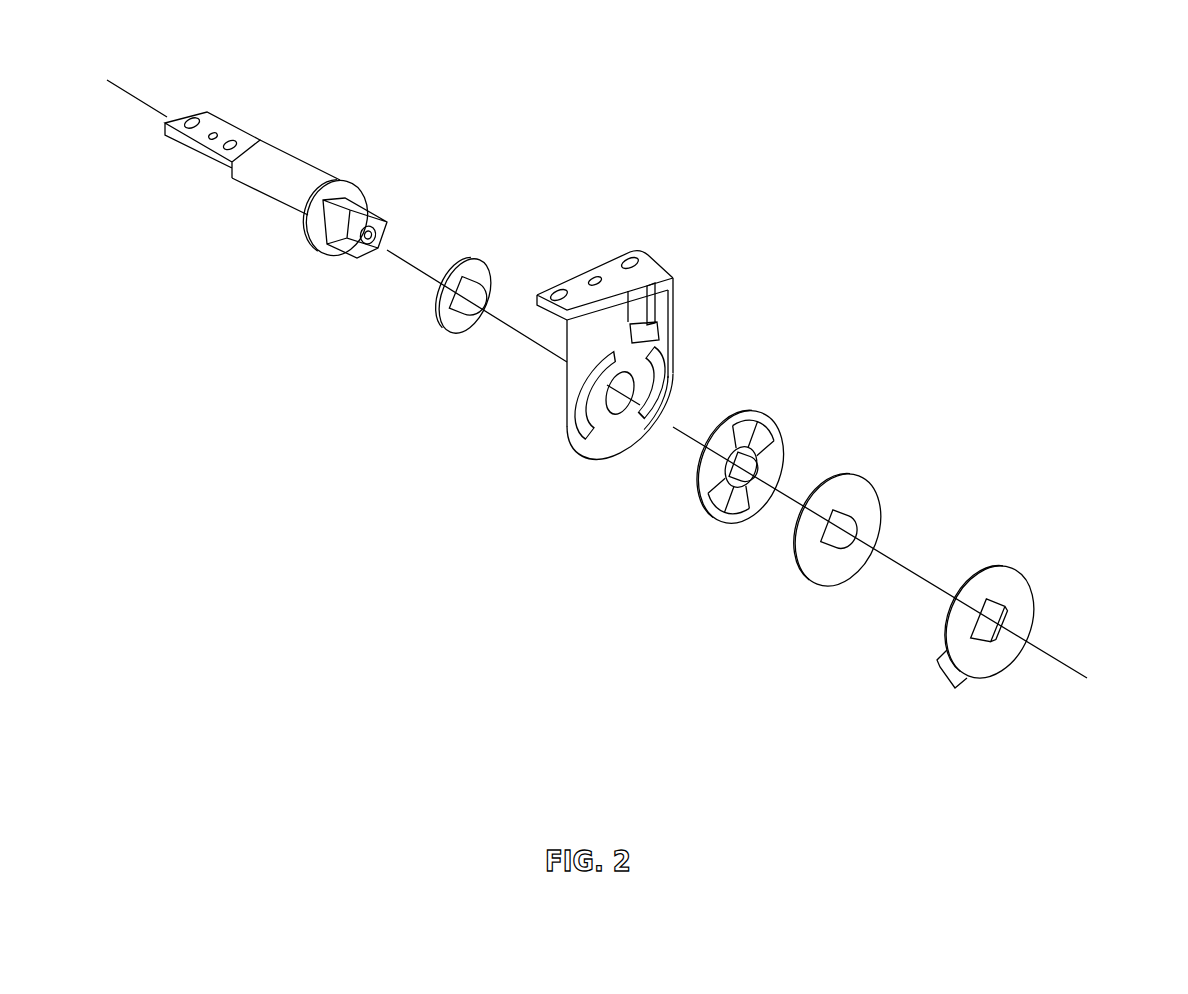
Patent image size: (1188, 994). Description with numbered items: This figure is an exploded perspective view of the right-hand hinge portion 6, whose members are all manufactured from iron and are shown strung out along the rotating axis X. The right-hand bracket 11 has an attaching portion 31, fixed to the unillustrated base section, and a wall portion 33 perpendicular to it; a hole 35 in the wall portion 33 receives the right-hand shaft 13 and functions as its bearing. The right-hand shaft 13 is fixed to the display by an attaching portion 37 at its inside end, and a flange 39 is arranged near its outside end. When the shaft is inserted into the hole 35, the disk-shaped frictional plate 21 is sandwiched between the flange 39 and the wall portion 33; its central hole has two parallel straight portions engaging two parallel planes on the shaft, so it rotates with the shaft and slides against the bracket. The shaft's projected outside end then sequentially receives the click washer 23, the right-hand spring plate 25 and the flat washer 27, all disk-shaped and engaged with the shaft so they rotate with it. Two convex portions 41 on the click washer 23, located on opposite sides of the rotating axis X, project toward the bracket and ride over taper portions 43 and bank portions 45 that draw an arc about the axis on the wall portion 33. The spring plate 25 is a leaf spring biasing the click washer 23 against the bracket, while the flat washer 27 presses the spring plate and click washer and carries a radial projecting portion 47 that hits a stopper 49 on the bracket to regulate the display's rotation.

The right-hand hinge portion 6 is at (745, 167).
The right-hand bracket 11 is at (594, 360).
The right-hand shaft 13 is at (261, 212).
The frictional plate 21 is at (470, 250).
The click washer 23 is at (760, 481).
The right-hand spring plate 25 is at (888, 497).
The flat washer 27 is at (980, 628).
The attaching portion 31 is at (573, 290).
The wall portion 33 is at (592, 343).
The hole 35 is at (627, 455).
The attaching portion 37 is at (188, 153).
The flange 39 is at (313, 245).
The convex portion 41 is at (728, 520).
The taper portion 43 is at (597, 369).
The bank portion 45 is at (575, 425).
The projecting portion 47 is at (942, 673).
The stopper 49 is at (660, 327).
The rotating axis X is at (1065, 667).